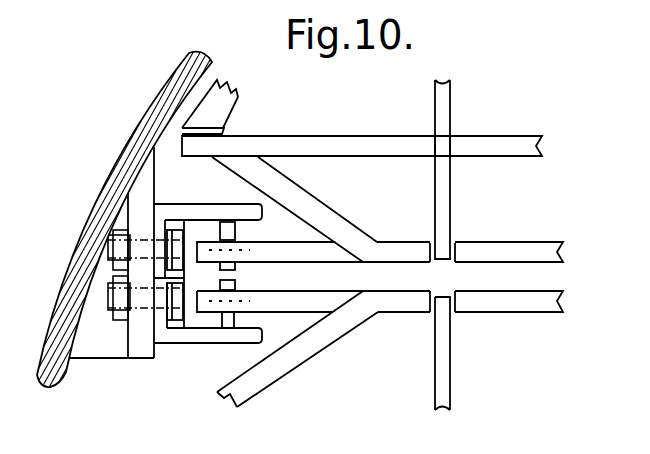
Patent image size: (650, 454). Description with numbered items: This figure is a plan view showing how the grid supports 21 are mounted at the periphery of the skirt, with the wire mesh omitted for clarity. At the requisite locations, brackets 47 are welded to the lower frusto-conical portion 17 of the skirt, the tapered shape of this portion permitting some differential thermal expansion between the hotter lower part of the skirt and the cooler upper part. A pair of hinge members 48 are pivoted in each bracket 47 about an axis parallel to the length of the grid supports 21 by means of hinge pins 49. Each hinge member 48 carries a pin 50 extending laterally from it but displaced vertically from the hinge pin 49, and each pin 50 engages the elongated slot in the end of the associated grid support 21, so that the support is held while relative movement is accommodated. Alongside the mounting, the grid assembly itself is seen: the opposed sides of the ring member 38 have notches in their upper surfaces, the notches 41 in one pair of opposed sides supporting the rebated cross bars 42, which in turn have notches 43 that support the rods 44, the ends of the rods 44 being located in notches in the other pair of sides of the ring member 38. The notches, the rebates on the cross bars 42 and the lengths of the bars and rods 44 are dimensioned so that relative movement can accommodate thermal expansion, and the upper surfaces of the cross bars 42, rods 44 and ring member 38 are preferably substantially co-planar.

The frusto-conical portion 17 is at (60, 335).
The grid support 21 is at (305, 251).
The ring member 38 is at (502, 255).
The notch 41 is at (432, 255).
The cross bar 42 is at (445, 116).
The notch 43 is at (435, 137).
The rod 44 is at (336, 144).
The bracket 47 is at (140, 350).
The hinge member 48 is at (192, 347).
The hinge pin 49 is at (108, 297).
The pin 50 is at (234, 268).